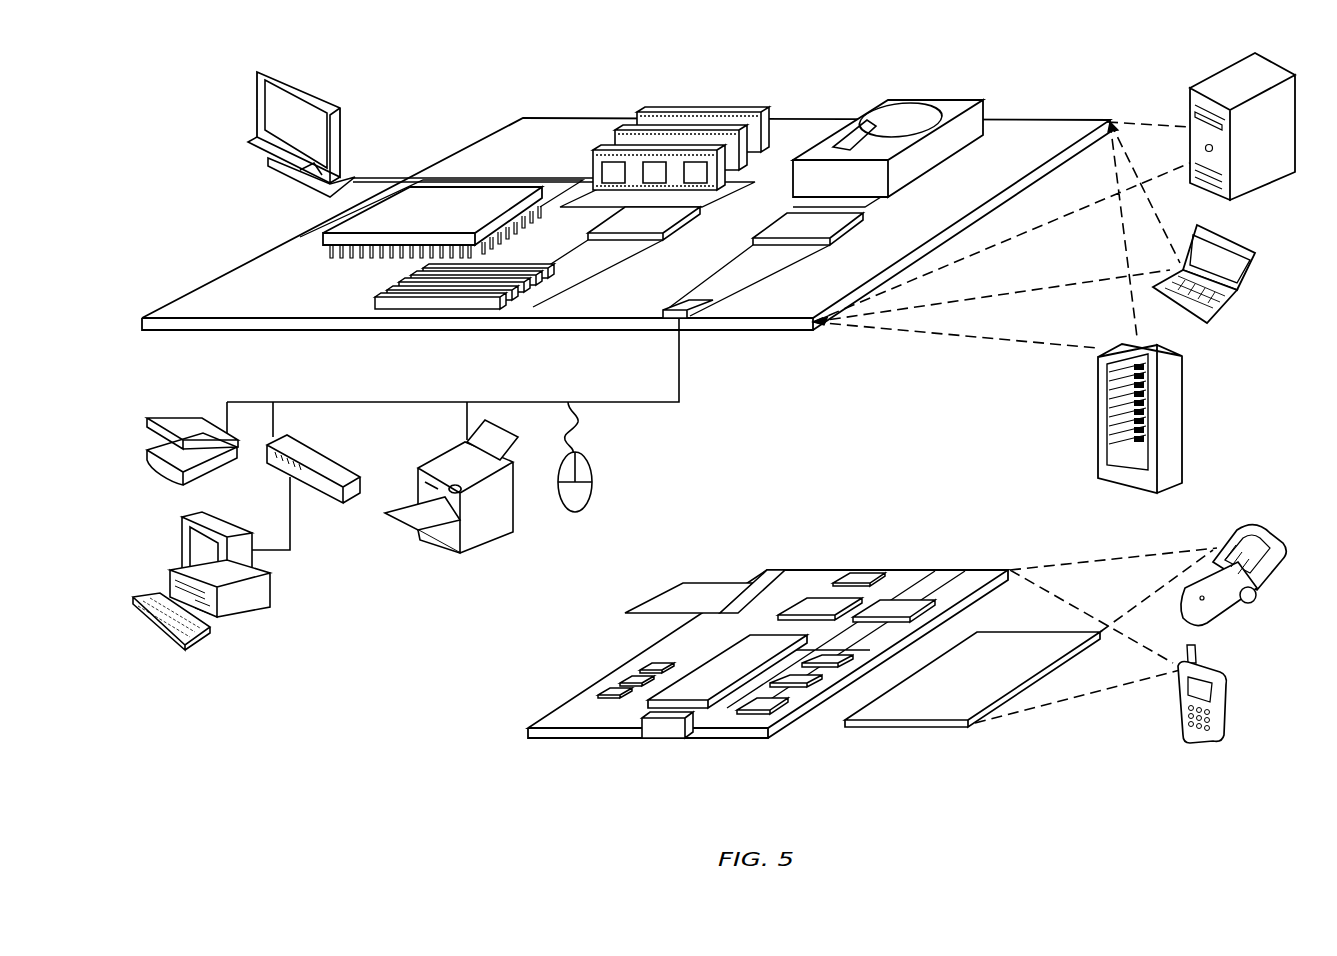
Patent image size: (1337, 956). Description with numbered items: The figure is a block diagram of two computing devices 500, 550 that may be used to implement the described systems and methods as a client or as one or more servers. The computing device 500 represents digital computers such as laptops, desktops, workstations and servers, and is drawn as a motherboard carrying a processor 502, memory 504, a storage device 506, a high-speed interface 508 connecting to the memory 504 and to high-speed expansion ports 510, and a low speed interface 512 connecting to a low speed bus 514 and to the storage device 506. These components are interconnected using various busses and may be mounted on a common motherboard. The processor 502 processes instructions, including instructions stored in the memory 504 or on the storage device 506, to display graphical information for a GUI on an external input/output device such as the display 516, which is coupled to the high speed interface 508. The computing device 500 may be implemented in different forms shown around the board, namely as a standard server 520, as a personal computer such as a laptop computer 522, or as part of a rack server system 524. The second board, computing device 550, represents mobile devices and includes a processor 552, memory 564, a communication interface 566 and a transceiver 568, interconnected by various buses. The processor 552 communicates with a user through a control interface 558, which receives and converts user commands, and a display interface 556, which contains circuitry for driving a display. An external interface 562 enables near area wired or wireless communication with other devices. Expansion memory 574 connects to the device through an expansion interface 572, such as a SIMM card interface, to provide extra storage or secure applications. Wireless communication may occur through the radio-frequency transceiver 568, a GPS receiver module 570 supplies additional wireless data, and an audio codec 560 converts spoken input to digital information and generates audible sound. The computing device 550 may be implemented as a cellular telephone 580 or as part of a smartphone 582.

The computing device 500 is at (447, 97).
The processor 502 is at (323, 237).
The memory 504 is at (650, 113).
The storage device 506 is at (877, 100).
The high-speed interface 508 is at (613, 217).
The high-speed expansion ports 510 is at (387, 293).
The low speed interface 512 is at (790, 220).
The low speed bus 514 is at (688, 318).
The display 516 is at (259, 74).
The standard server 520 is at (1188, 105).
The laptop computer 522 is at (1250, 250).
The rack server system 524 is at (1098, 443).
The computing device 550 is at (505, 736).
The processor 552 is at (700, 697).
The display interface 556 is at (767, 703).
The control interface 558 is at (800, 683).
The audio codec 560 is at (825, 660).
The external interface 562 is at (667, 737).
The memory 564 is at (623, 687).
The communication interface 566 is at (817, 607).
The transceiver 568 is at (895, 607).
The GPS receiver module 570 is at (868, 573).
The expansion interface 572 is at (753, 583).
The expansion memory 574 is at (683, 583).
The cellular telephone 580 is at (1247, 537).
The smartphone 582 is at (1180, 697).